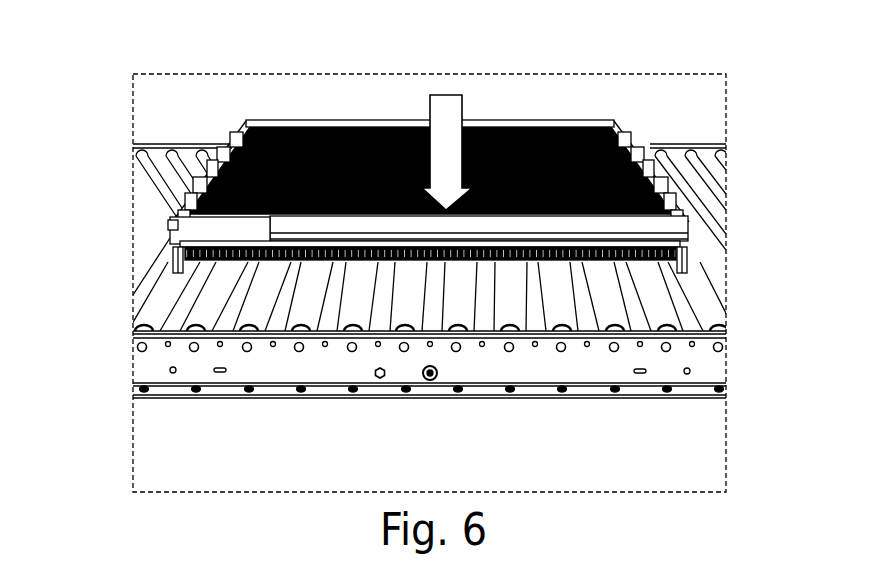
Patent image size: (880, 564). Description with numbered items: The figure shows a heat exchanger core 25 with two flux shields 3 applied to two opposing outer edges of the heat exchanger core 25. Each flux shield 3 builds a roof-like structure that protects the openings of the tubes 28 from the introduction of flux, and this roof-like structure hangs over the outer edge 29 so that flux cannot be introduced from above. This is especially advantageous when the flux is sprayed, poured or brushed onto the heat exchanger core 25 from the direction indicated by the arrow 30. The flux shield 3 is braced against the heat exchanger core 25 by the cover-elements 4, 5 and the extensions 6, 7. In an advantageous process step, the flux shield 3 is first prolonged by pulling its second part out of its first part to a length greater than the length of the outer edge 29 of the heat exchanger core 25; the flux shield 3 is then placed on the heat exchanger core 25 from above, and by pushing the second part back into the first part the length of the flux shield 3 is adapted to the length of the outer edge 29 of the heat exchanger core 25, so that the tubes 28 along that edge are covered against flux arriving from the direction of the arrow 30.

The flux shield 3 is at (377, 125).
The cover-element 4 is at (688, 235).
The cover-element 5 is at (173, 222).
The extension 6 is at (690, 262).
The extension 7 is at (176, 257).
The heat exchanger core 25 is at (298, 127).
The tubes 28 is at (247, 262).
The outer edge 29 is at (212, 262).
The arrow 30 is at (453, 112).